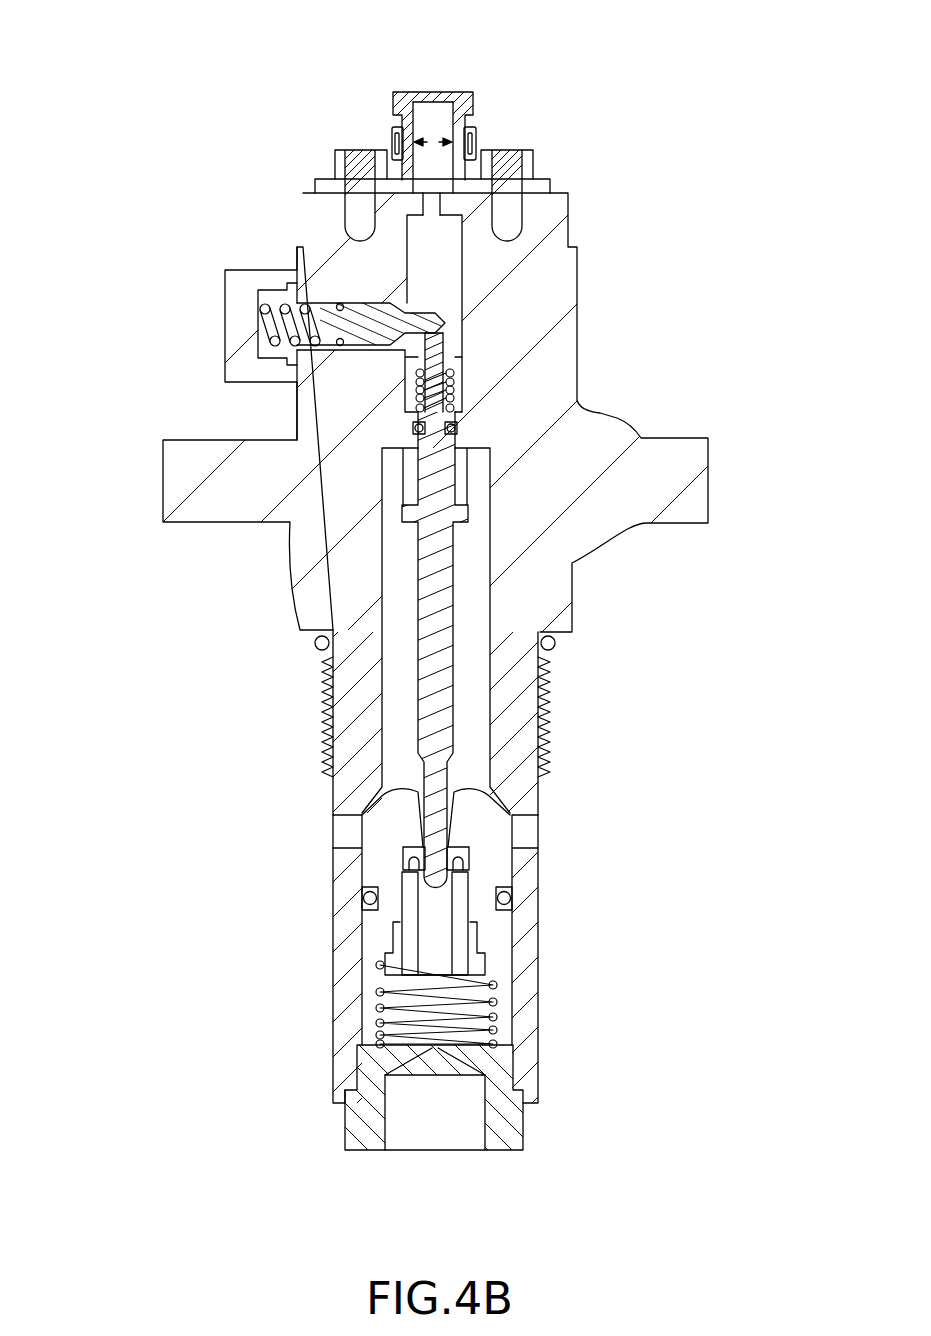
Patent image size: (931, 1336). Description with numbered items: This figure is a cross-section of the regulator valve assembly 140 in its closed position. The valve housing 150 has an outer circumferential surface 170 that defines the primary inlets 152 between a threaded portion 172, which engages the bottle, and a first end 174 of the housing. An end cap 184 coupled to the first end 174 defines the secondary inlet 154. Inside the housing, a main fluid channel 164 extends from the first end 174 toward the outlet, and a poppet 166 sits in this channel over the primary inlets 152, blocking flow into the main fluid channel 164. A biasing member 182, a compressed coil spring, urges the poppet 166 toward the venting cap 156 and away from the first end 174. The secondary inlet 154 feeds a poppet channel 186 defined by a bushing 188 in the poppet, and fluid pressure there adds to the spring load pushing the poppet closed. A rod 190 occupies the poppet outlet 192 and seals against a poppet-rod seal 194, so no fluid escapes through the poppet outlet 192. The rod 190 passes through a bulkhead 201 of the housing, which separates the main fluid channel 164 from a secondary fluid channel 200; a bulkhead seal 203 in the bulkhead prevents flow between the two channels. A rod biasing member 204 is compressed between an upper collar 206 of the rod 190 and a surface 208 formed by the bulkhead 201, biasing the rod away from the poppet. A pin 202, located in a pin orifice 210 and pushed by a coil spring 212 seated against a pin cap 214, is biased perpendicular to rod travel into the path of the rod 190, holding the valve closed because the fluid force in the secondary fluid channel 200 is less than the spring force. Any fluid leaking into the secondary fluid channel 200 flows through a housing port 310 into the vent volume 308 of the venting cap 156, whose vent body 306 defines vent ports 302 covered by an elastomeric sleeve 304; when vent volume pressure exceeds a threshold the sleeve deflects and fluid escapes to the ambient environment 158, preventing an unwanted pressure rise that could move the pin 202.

The regulator valve assembly 140 is at (95, 105).
The valve housing 150 is at (586, 477).
The primary inlets 152 is at (330, 830).
The secondary inlet 154 is at (435, 1132).
The venting cap 156 is at (471, 90).
The ambient environment 158 is at (557, 115).
The main fluid channel 164 is at (484, 670).
The poppet 166 is at (380, 862).
The outer circumferential surface 170 is at (333, 963).
The threaded portion 172 is at (305, 655).
The first end 174 is at (350, 1095).
The biasing member 182 is at (383, 1017).
The end cap 184 is at (395, 1097).
The poppet channel 186 is at (452, 965).
The bushing 188 is at (405, 910).
The rod 190 is at (430, 606).
The poppet outlet 192 is at (458, 812).
The poppet-rod seal 194 is at (470, 861).
The secondary fluid channel 200 is at (458, 278).
The bulkhead 201 is at (468, 443).
The pin 202 is at (370, 342).
The bulkhead seal 203 is at (420, 435).
The biasing member 204 is at (452, 393).
The upper collar 206 is at (460, 356).
The surface 208 is at (418, 405).
The pin orifice 210 is at (328, 300).
The coil spring 212 is at (265, 305).
The pin cap 214 is at (235, 362).
The vent ports 302 is at (455, 150).
The elastomeric sleeve 304 is at (393, 130).
The vent body 306 is at (450, 96).
The vent volume 308 is at (432, 118).
The housing port 310 is at (428, 207).